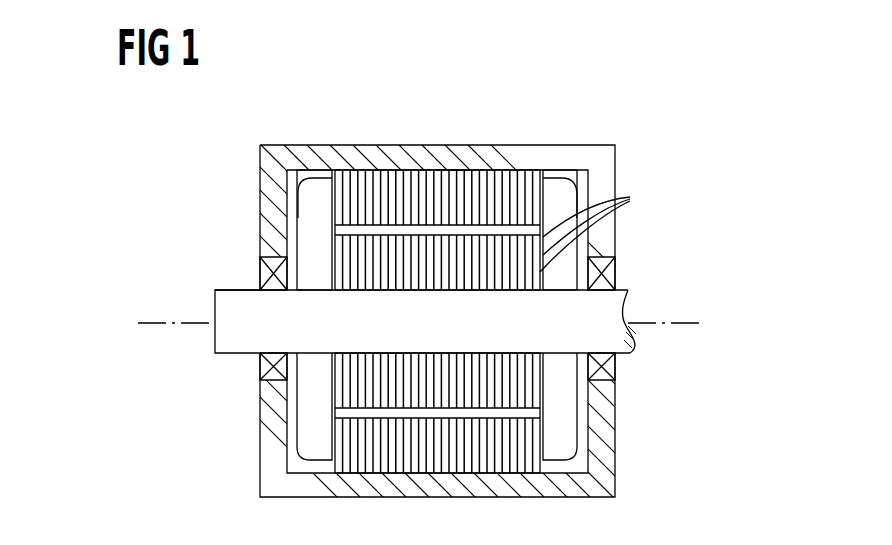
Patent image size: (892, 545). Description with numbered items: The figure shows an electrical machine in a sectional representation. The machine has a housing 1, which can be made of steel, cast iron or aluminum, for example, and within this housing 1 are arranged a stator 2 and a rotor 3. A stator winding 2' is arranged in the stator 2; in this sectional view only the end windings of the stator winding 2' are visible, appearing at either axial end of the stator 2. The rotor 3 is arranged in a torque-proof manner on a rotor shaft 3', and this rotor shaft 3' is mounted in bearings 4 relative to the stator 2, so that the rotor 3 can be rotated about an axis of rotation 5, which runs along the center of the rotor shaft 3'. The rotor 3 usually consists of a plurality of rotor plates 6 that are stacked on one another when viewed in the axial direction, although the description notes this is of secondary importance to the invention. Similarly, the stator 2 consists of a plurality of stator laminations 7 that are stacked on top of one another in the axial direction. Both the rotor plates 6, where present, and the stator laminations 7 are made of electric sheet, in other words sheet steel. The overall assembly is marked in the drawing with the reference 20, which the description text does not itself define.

The housing 1 is at (562, 158).
The stator 2 is at (398, 309).
The stator winding 2' is at (437, 157).
The rotor 3 is at (490, 321).
The rotor shaft 3' is at (238, 256).
The bearings 4 is at (262, 365).
The axis of rotation 5 is at (157, 322).
The rotor plates 6 is at (595, 229).
The stator laminations 7 is at (467, 178).
The electric machine 20 is at (670, 167).